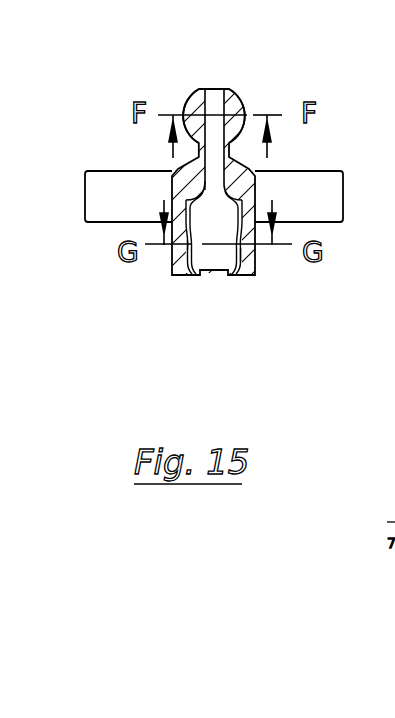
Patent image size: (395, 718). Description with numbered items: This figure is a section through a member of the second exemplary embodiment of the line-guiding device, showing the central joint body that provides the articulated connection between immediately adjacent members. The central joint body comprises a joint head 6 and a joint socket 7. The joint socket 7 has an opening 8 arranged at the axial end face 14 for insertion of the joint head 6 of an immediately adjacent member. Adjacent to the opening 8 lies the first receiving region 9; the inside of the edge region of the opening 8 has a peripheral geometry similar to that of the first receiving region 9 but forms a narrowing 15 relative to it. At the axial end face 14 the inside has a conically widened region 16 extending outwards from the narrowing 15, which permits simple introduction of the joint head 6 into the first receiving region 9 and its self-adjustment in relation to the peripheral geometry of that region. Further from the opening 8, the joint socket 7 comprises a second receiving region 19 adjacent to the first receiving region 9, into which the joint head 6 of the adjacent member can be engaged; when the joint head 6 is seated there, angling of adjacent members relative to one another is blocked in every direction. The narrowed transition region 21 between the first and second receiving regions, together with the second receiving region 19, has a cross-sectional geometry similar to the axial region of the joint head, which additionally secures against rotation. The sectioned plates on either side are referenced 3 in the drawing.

The component plates 3 is at (92, 183).
The joint head 6 is at (190, 100).
The joint socket 7 is at (186, 232).
The opening 8 is at (198, 267).
The first receiving region 9 is at (212, 247).
The axial end face 14 is at (236, 272).
The narrowing 15 is at (184, 268).
The conically widened region 16 is at (235, 258).
The second receiving region 19 is at (210, 214).
The transition region 21 is at (190, 245).